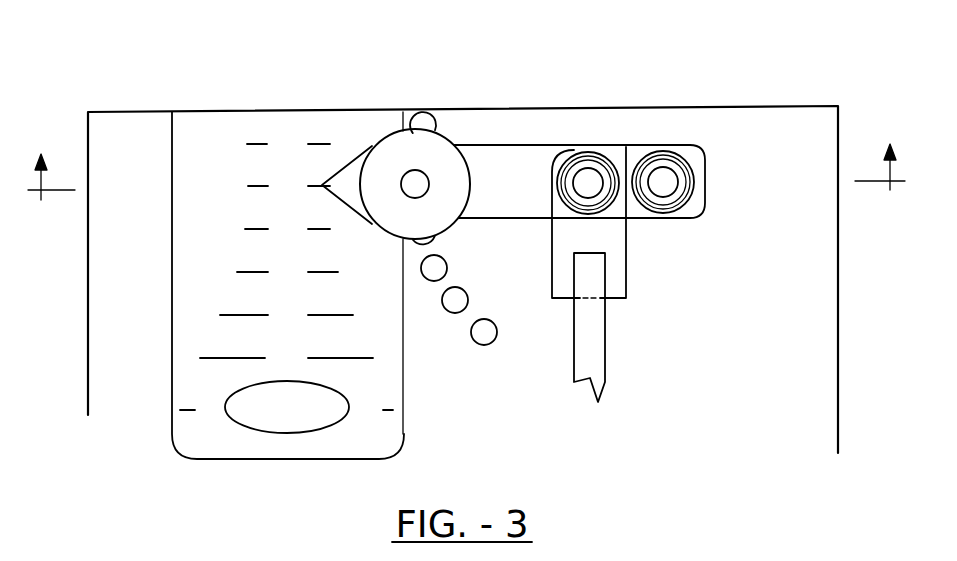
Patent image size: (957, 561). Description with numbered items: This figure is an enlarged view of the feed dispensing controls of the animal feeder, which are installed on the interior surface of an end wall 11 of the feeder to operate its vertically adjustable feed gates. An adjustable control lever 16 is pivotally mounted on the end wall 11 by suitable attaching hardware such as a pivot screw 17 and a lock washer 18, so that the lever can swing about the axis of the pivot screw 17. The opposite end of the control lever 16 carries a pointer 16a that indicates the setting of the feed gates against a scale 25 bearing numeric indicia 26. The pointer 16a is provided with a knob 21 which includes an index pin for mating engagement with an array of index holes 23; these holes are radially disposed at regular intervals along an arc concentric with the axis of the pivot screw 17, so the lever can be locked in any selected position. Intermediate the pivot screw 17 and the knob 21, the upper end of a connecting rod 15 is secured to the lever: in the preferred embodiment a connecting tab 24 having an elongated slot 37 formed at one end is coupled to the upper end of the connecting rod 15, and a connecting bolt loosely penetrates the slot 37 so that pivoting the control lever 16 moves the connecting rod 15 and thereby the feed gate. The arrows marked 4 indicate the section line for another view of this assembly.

The end wall 11 is at (670, 105).
The section line 4- 4 is at (463, 184).
The scale 25 is at (224, 138).
The numeric indicia 26 is at (277, 355).
The pointer 16a is at (350, 165).
The knob 21 is at (445, 135).
The index holes 23 is at (484, 318).
The control lever 16 is at (487, 165).
The elongated slot 37 is at (580, 173).
The lock washer 18 is at (678, 157).
The pivot screw 17 is at (663, 185).
The connecting tab 24 is at (612, 242).
The connecting rod 15 is at (606, 352).